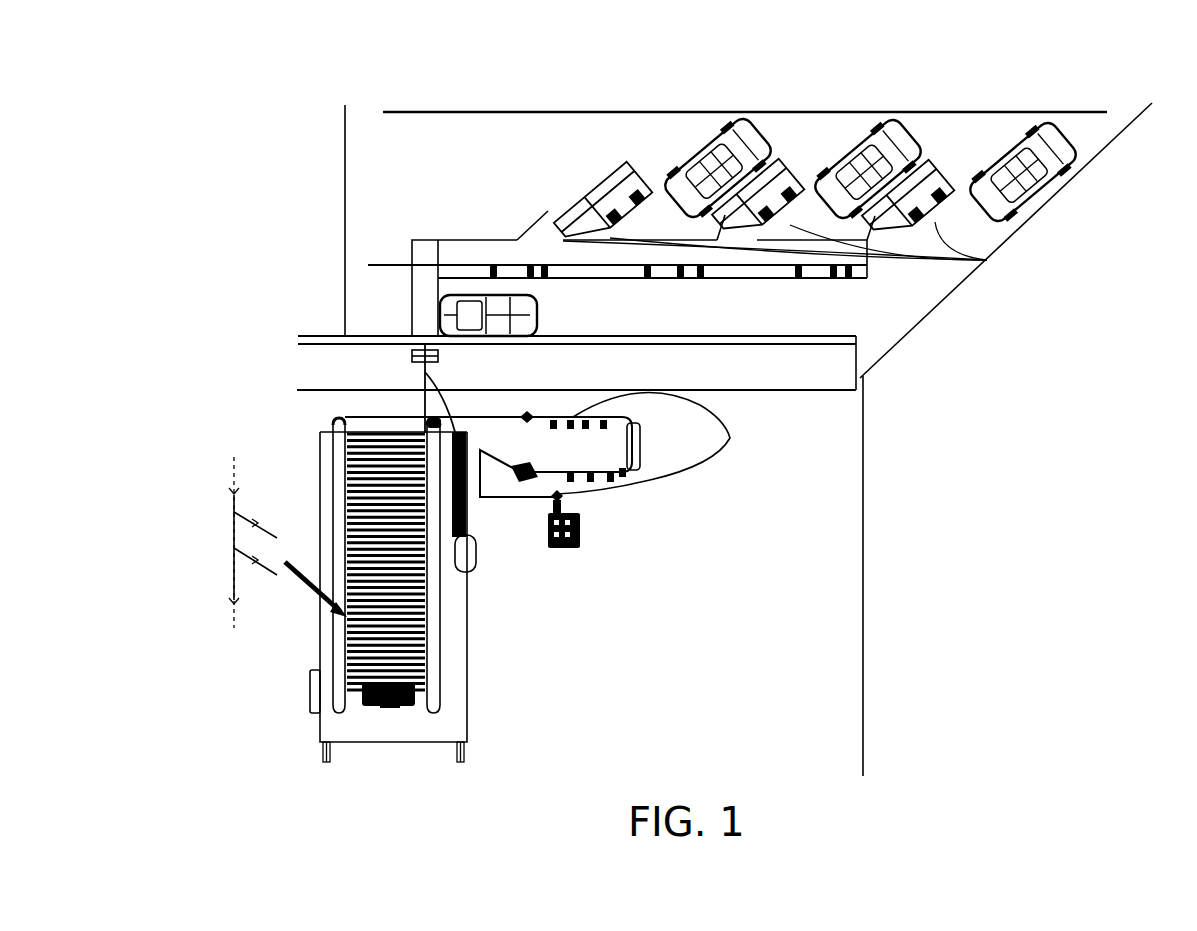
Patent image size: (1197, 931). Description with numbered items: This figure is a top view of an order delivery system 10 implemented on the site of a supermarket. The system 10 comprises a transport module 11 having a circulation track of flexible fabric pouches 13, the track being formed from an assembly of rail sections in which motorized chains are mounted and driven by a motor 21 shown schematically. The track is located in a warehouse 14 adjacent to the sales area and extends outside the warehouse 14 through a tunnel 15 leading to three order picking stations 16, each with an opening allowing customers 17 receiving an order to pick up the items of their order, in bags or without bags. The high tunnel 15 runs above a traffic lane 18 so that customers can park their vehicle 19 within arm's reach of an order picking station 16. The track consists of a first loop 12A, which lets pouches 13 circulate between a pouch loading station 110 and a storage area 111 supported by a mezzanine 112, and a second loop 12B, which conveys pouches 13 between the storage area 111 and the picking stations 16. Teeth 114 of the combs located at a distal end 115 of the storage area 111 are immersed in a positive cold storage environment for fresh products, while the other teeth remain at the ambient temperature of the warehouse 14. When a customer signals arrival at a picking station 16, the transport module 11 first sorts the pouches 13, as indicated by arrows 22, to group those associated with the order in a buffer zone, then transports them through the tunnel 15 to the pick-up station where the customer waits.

The order delivery system 10 is at (897, 476).
The transport module 11 is at (747, 527).
The first loop 12A is at (667, 444).
The second loop 12B is at (422, 400).
The flexible fabric pouches 13 is at (640, 447).
The warehouse 14 is at (863, 551).
The tunnel 15 is at (422, 280).
The order picking stations 16 is at (618, 183).
The customers 17 is at (987, 260).
The traffic lane 18 is at (883, 305).
The vehicle 19 is at (883, 130).
The motor 21 is at (440, 680).
The arrows 22 is at (220, 550).
The pouch loading station 110 is at (575, 500).
The storage area 111 is at (427, 653).
The mezzanine 112 is at (447, 718).
The teeth 114 is at (358, 693).
The distal end 115 is at (310, 690).